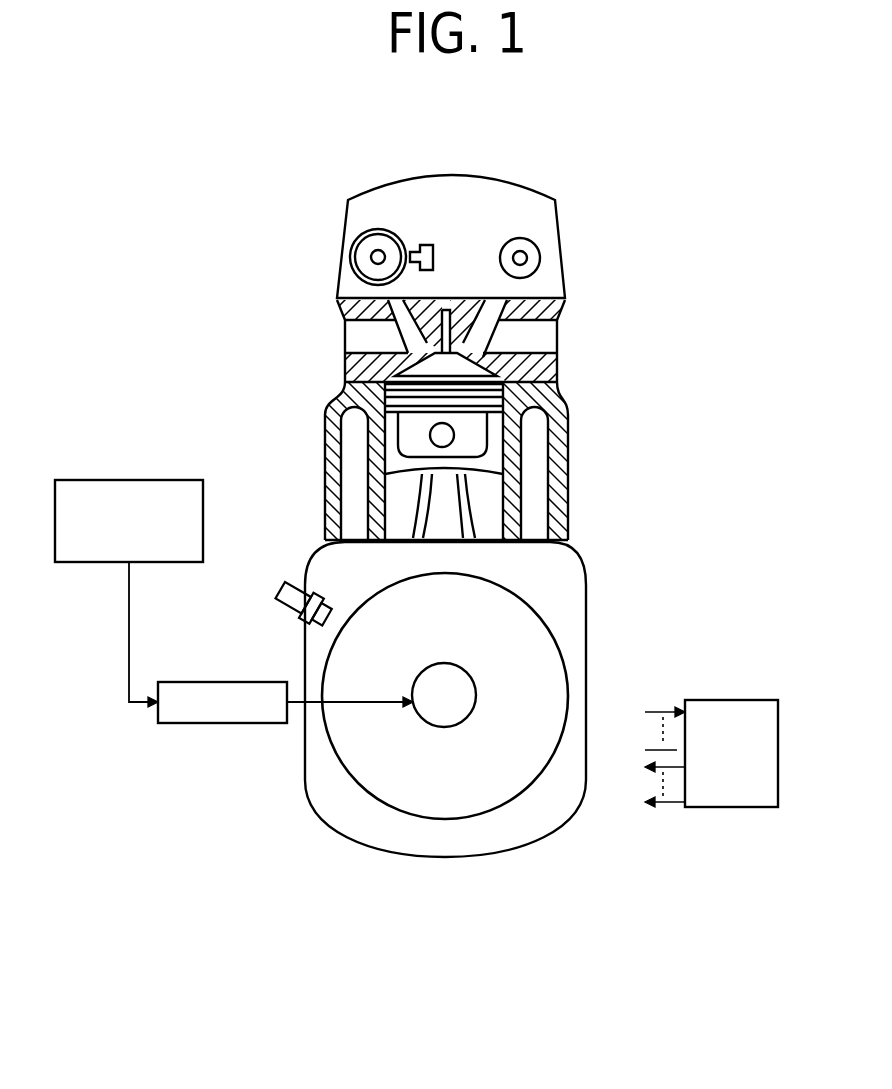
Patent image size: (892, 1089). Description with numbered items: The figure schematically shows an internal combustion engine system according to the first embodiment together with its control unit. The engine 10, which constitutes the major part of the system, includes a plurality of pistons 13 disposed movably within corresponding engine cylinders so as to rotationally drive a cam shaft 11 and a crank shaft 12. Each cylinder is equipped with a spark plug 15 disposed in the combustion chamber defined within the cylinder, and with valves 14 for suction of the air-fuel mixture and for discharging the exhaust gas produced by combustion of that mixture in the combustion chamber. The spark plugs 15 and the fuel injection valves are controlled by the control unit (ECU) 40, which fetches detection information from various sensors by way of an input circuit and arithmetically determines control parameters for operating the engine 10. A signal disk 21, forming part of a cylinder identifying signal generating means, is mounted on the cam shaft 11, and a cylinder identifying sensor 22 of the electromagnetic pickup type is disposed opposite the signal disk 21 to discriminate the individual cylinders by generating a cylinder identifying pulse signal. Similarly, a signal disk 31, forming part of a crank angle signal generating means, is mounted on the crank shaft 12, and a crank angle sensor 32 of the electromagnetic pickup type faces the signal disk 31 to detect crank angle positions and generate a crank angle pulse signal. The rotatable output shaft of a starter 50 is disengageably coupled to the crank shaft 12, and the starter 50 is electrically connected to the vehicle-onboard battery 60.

The engine 10 is at (568, 468).
The cam shaft 11 is at (368, 268).
The crank shaft 12 is at (463, 668).
The piston 13 is at (375, 463).
The valve 14 is at (387, 340).
The spark plug 15 is at (447, 327).
The signal disk 21 is at (382, 230).
The cylinder identifying sensor 22 is at (427, 245).
The signal disk 31 is at (357, 778).
The crank angle sensor 32 is at (292, 614).
The control unit (ECU) 40 is at (737, 700).
The starter 50 is at (222, 723).
The vehicle-onboard battery 60 is at (128, 480).